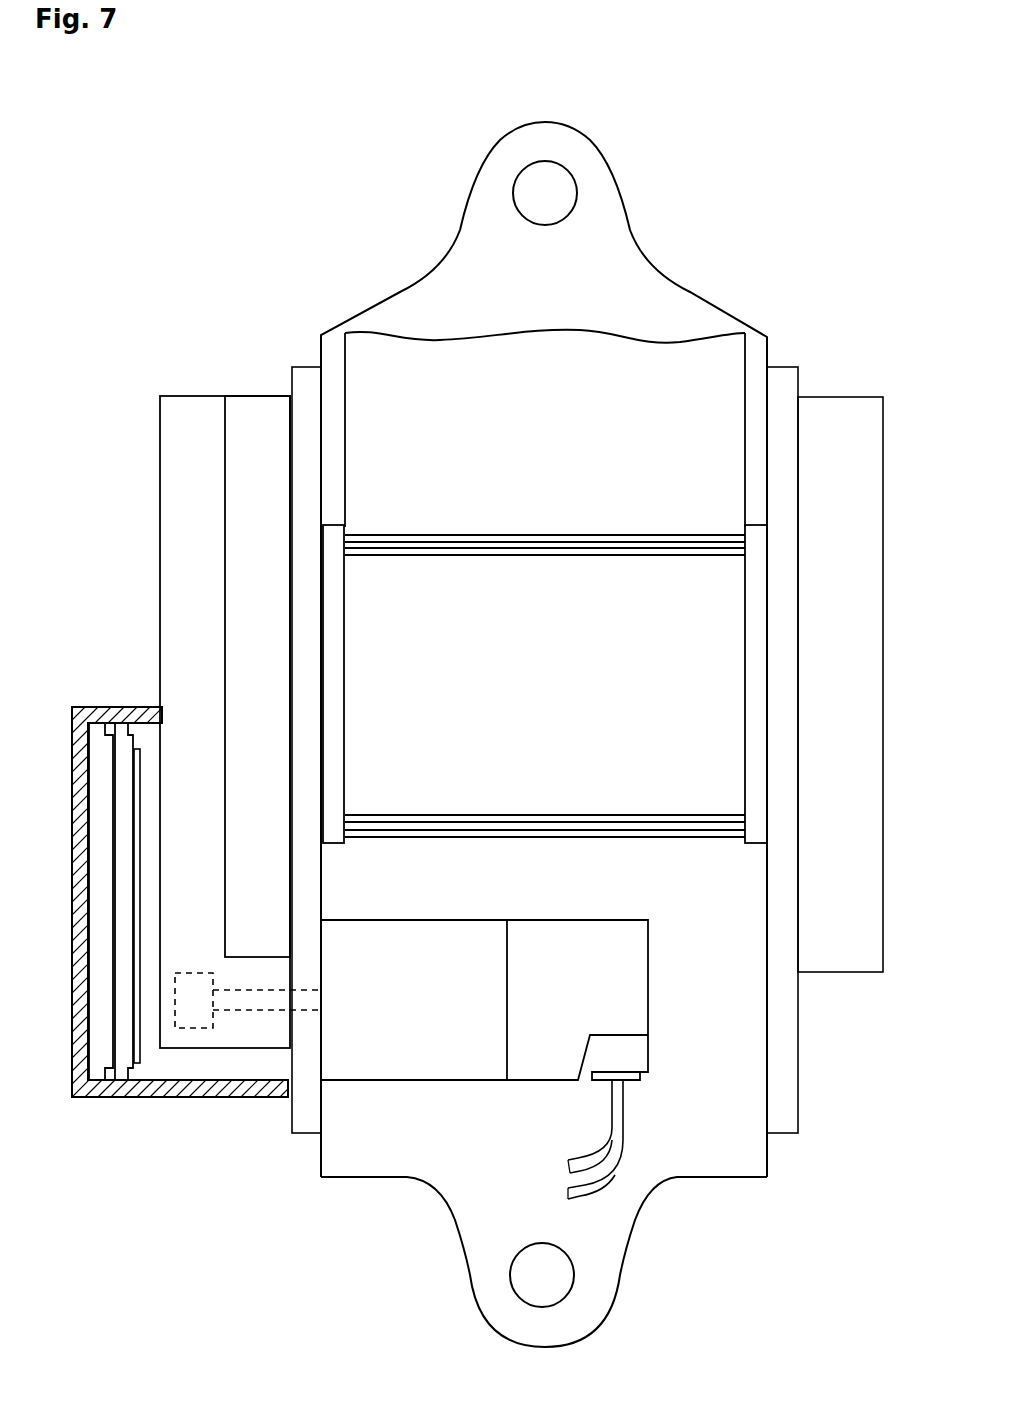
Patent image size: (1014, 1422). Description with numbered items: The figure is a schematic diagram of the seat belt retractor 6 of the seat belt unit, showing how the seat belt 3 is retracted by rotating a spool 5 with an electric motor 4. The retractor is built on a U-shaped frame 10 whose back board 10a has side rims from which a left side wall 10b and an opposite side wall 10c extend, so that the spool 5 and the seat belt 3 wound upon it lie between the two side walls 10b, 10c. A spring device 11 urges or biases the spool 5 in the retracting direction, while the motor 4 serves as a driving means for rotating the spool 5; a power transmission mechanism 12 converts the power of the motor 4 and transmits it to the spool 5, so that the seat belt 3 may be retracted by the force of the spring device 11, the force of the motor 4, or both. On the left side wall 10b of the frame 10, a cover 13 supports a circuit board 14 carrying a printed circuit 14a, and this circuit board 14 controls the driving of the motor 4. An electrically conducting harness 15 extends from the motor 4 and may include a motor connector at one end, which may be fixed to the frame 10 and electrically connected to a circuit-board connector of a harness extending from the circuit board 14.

The seat belt 3 is at (598, 362).
The electric motor 4 is at (655, 1028).
The spool 5 is at (557, 705).
The seat belt retractor 6 is at (293, 327).
The U-shaped frame 10 is at (680, 311).
The back board 10a is at (447, 1137).
The left side wall 10b is at (303, 1093).
The side wall 10c is at (787, 1097).
The spring device 11 is at (258, 403).
The power transmission mechanism 12 is at (195, 403).
The cover 13 is at (170, 1087).
The circuit board 14 is at (120, 1030).
The printed circuit 14a is at (135, 780).
The electrically conducting harness 15 is at (596, 1133).